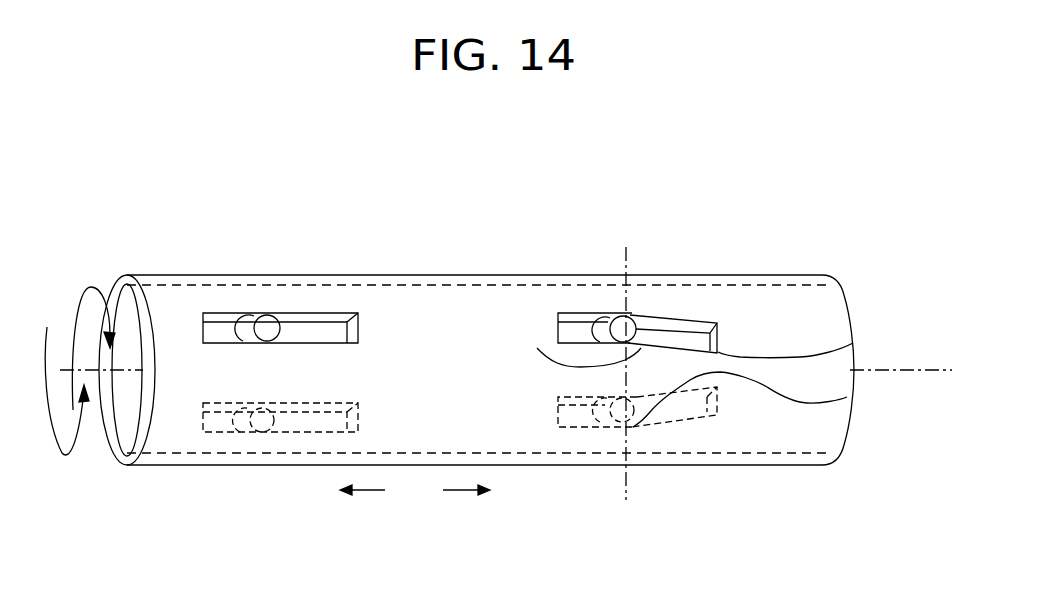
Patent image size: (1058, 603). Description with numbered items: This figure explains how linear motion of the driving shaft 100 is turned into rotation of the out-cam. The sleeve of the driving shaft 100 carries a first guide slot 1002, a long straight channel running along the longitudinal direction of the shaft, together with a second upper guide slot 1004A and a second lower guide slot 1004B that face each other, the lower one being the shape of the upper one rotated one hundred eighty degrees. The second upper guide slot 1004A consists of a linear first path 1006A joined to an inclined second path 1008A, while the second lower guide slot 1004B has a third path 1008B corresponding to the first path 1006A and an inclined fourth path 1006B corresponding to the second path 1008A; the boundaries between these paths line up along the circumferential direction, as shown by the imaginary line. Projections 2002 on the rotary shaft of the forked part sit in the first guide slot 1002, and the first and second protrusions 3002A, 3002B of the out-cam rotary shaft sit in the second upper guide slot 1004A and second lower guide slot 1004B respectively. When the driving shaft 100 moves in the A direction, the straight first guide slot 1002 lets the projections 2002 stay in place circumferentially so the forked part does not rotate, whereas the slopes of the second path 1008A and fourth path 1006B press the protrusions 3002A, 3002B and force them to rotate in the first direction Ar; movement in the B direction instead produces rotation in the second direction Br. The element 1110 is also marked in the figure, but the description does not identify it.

The driving shaft 100 is at (191, 252).
The first guide slot 1002 is at (322, 313).
The projections 2002 is at (262, 318).
The connecting wire 1110 is at (537, 348).
The second upper guide slot 1004A is at (642, 257).
The first path 1006A is at (591, 313).
The second path 1008A is at (685, 320).
The first protrusion 3002A is at (853, 343).
The second protrusion 3002B is at (847, 397).
The second lower guide slot 1004B is at (641, 487).
The fourth path 1006B is at (683, 418).
The third path 1008B is at (685, 537).